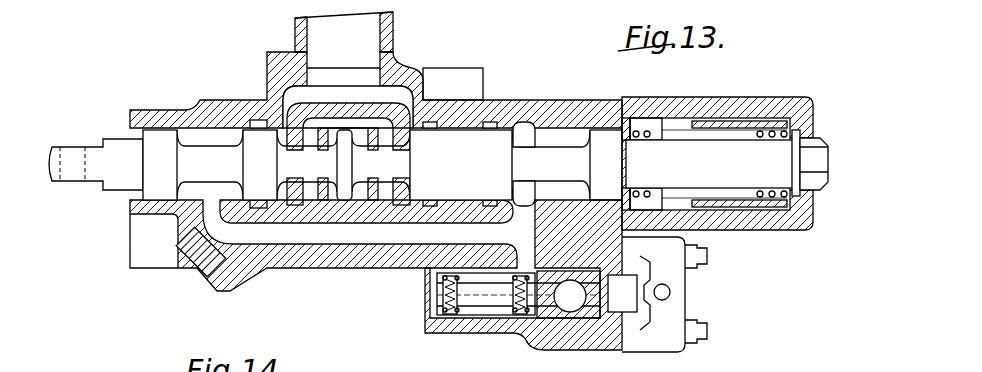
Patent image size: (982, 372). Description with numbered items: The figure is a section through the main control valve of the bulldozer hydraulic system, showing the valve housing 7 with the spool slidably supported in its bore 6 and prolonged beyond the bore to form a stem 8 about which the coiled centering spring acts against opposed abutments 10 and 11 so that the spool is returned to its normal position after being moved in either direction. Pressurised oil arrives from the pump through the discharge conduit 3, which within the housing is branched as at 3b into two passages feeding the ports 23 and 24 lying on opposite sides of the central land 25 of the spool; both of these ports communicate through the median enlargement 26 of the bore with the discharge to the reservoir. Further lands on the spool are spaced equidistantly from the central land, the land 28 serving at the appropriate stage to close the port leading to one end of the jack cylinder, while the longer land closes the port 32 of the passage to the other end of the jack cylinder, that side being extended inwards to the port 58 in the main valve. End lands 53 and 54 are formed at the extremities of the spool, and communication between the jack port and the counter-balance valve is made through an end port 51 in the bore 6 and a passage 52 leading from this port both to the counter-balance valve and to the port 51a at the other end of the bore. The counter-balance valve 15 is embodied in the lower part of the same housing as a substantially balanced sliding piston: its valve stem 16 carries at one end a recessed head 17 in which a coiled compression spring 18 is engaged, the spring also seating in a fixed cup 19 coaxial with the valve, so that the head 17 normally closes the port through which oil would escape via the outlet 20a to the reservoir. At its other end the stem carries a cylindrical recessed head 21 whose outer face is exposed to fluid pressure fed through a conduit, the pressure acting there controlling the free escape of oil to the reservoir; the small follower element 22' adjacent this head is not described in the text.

The discharge conduit 3 is at (370, 33).
The branch of supply line 3b is at (342, 95).
The bore 6 is at (562, 137).
The valve housing 7 is at (528, 100).
The stem 8 is at (714, 173).
The abutment 10 is at (631, 118).
The abutment 11 is at (796, 97).
The counter-balance valve 15 is at (546, 340).
The valve stem 16 is at (590, 300).
The recessed head 17 is at (505, 318).
The coiled compression spring 18 is at (458, 312).
The fixed cup 19 is at (648, 131).
The outlet 20a is at (566, 313).
The cylindrical recessed head 21 is at (636, 286).
The cam follower pin 22' is at (695, 293).
The port 23 is at (292, 122).
The port 24 is at (433, 80).
The central land 25 is at (343, 206).
The median enlargement 26 is at (323, 206).
The land 28 is at (270, 172).
The port 32 is at (429, 121).
The end port 51 is at (186, 222).
The port 51a is at (504, 173).
The passage 52 is at (376, 238).
The end land 53 is at (170, 172).
The end land 54 is at (618, 172).
The port 58 is at (492, 122).